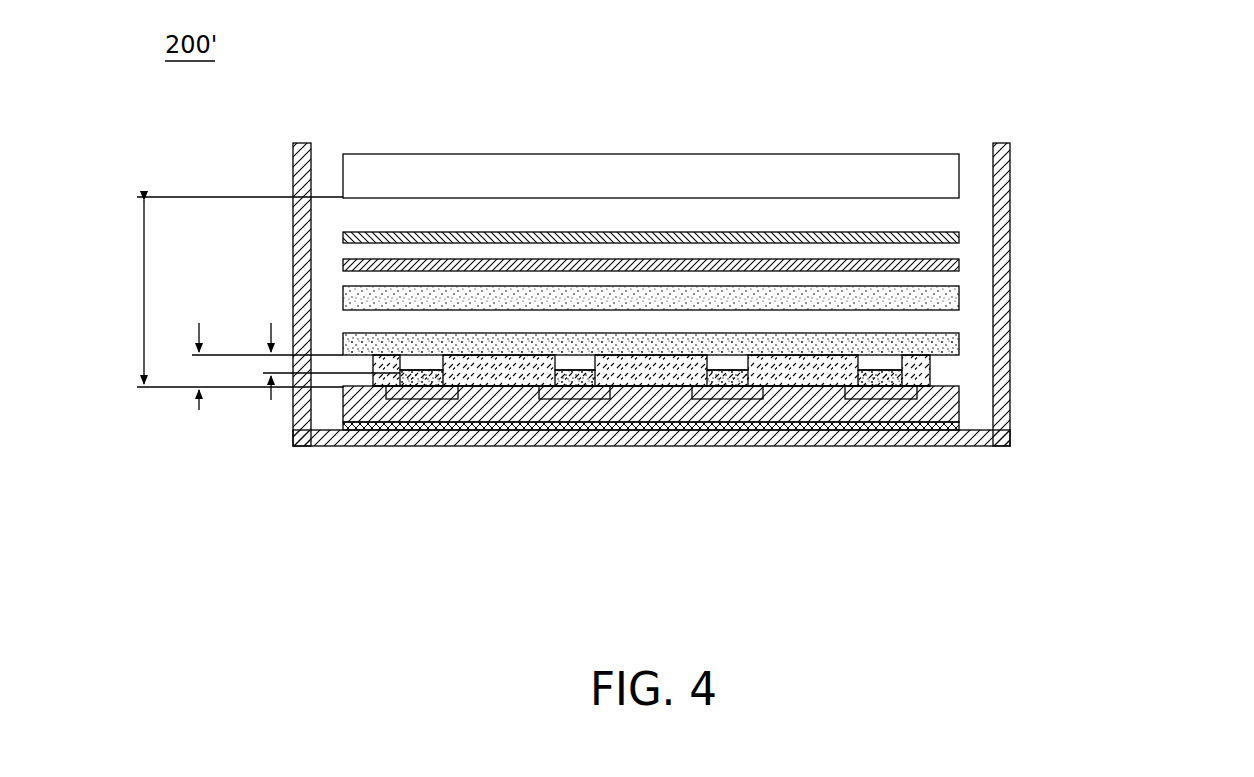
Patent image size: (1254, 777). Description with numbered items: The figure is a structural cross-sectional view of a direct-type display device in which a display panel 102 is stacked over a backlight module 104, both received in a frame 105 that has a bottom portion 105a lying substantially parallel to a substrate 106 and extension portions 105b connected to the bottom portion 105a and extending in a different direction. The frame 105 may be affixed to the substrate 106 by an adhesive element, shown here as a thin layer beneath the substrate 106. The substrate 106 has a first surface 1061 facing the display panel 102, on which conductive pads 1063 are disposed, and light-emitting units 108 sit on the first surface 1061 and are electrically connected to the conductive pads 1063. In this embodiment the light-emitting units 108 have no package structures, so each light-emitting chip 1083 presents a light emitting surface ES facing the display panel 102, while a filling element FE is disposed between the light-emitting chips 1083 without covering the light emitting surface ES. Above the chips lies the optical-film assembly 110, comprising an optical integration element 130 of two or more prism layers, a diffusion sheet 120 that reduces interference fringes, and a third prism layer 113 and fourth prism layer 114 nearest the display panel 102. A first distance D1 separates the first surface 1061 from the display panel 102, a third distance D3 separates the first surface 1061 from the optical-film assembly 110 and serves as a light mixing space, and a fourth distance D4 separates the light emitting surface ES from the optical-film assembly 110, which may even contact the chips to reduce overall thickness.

The display panel 102 is at (427, 162).
The backlight module 104 is at (1170, 143).
The frame 105 is at (650, 341).
The bottom portion 105a is at (718, 447).
The extension portion 105b is at (1012, 431).
The substrate 106 is at (718, 435).
The first surface 1061 is at (930, 378).
The conductive pad 1063 is at (420, 395).
The light-emitting unit 108 is at (660, 448).
The light-emitting chip 1083 is at (588, 361).
The optical-film assembly 110 is at (743, 292).
The third prism layer 113 is at (959, 265).
The fourth prism layer 114 is at (959, 238).
The diffusion sheet 120 is at (959, 297).
The optical integration element 130 is at (712, 345).
The filling element FE is at (488, 368).
The light emitting surface ES is at (735, 356).
The first distance D1 is at (225, 292).
The third distance D3 is at (251, 366).
The fourth distance D4 is at (312, 361).